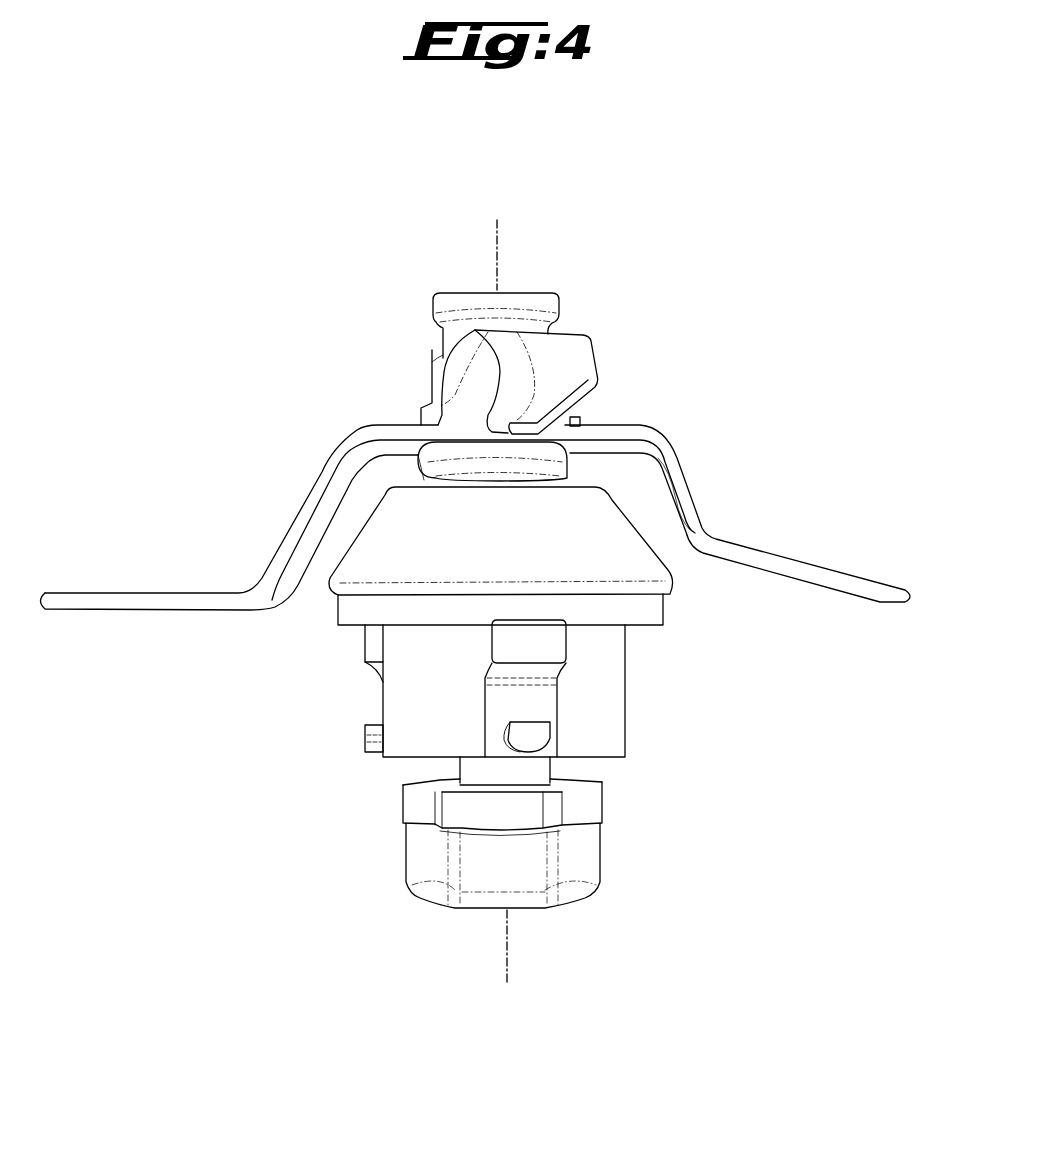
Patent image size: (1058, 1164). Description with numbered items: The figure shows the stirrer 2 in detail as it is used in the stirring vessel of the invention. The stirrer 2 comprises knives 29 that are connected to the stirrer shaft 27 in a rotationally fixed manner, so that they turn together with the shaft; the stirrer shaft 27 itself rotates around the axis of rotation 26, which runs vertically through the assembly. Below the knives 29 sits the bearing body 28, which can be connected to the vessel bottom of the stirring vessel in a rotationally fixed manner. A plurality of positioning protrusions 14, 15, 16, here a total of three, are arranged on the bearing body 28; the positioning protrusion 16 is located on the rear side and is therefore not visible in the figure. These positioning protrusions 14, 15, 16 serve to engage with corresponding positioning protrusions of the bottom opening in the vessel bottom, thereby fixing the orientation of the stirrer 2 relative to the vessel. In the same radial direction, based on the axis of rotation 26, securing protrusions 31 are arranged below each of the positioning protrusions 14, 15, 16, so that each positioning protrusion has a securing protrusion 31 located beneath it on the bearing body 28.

The stirrer 2 is at (297, 363).
The positioning protrusion 14 is at (370, 652).
The positioning protrusion 15 is at (654, 688).
The positioning protrusion 16 is at (535, 647).
The axis of rotation 26 is at (498, 255).
The stirrer shaft 27 is at (527, 775).
The bearing body 28 is at (635, 608).
The knives 29 is at (564, 362).
The securing protrusion 31 is at (525, 735).